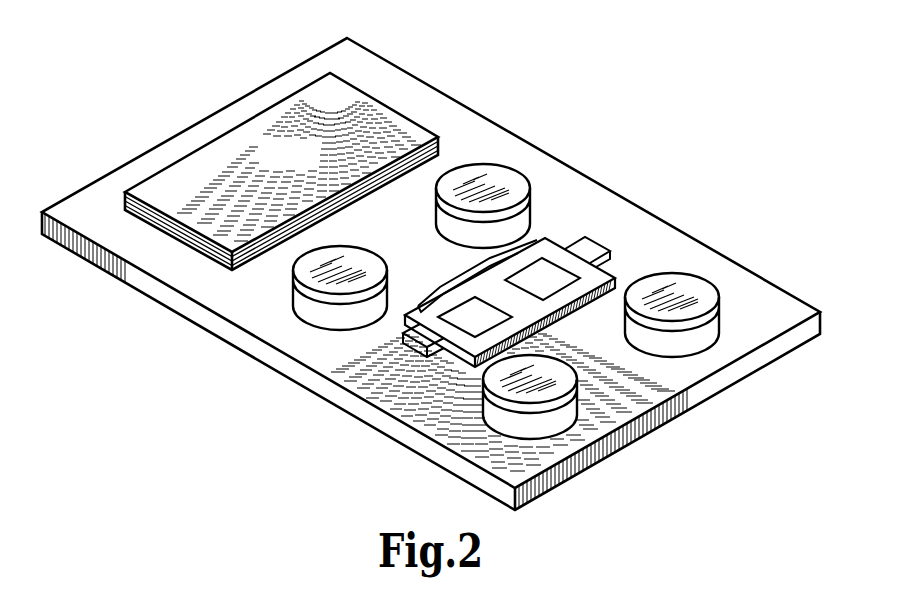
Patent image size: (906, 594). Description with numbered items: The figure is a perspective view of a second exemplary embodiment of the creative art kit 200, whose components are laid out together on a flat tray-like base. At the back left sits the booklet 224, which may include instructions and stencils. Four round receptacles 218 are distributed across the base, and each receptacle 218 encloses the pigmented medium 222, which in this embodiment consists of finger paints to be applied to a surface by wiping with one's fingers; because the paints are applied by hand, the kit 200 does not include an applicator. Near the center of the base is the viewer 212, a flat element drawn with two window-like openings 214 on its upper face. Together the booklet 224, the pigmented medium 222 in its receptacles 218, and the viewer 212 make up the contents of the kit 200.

The kit 200 is at (443, 268).
The viewer 212 is at (505, 302).
The contact pads 214 is at (473, 322).
The receptacle 218 is at (453, 228).
The pigmented medium 222 is at (478, 332).
The booklet 224 is at (310, 166).